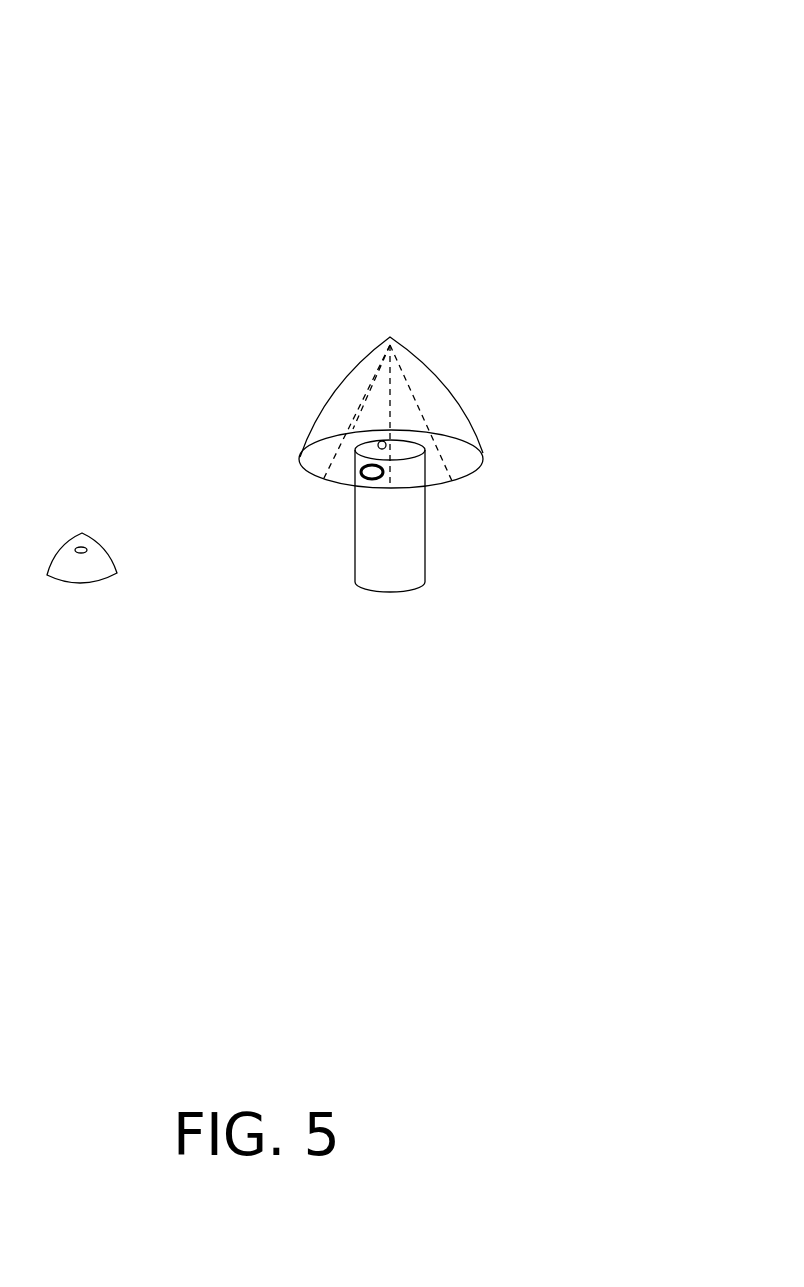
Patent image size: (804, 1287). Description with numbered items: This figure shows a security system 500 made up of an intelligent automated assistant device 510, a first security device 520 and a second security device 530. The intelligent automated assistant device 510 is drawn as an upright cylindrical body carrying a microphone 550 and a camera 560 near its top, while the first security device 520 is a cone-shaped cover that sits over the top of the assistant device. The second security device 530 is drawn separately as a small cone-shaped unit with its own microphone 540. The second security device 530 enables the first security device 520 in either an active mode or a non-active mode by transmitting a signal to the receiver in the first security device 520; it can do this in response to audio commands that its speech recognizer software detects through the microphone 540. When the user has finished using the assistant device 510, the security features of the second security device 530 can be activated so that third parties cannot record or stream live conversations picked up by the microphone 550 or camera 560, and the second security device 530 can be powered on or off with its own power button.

The security system 500 is at (575, 60).
The intelligent automated assistant device 510 is at (425, 515).
The first security device 520 is at (482, 460).
The second security device 530 is at (117, 573).
The microphone 540 is at (80, 537).
The microphone 550 is at (388, 442).
The camera 560 is at (402, 462).